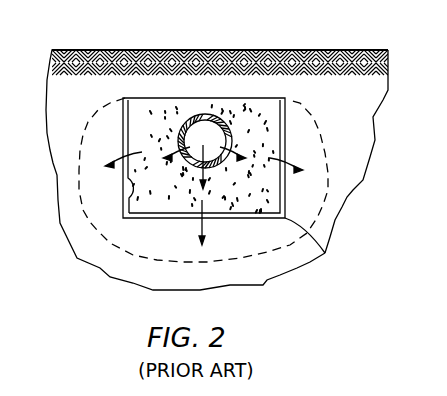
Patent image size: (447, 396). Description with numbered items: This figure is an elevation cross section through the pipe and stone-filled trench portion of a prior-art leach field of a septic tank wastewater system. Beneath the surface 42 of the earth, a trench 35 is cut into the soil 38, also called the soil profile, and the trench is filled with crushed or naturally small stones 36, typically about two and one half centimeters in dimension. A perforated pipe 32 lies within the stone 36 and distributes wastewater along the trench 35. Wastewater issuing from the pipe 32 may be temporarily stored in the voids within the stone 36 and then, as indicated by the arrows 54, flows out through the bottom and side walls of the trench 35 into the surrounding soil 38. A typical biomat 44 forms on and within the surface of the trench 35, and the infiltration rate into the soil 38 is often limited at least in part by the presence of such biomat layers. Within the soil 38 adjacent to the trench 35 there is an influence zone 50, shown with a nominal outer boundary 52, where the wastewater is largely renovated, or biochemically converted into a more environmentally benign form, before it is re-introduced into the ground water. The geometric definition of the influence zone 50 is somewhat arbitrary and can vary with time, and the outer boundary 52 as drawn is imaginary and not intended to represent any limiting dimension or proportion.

The perforated pipe 32 is at (205, 114).
The trench 35 is at (325, 253).
The stone 36 is at (272, 122).
The soil 38 is at (100, 98).
The surface 42 is at (145, 50).
The biomat 44 is at (135, 200).
The influence zone 50 is at (315, 140).
The outer boundary 52 is at (342, 197).
The arrows 54 is at (180, 137).